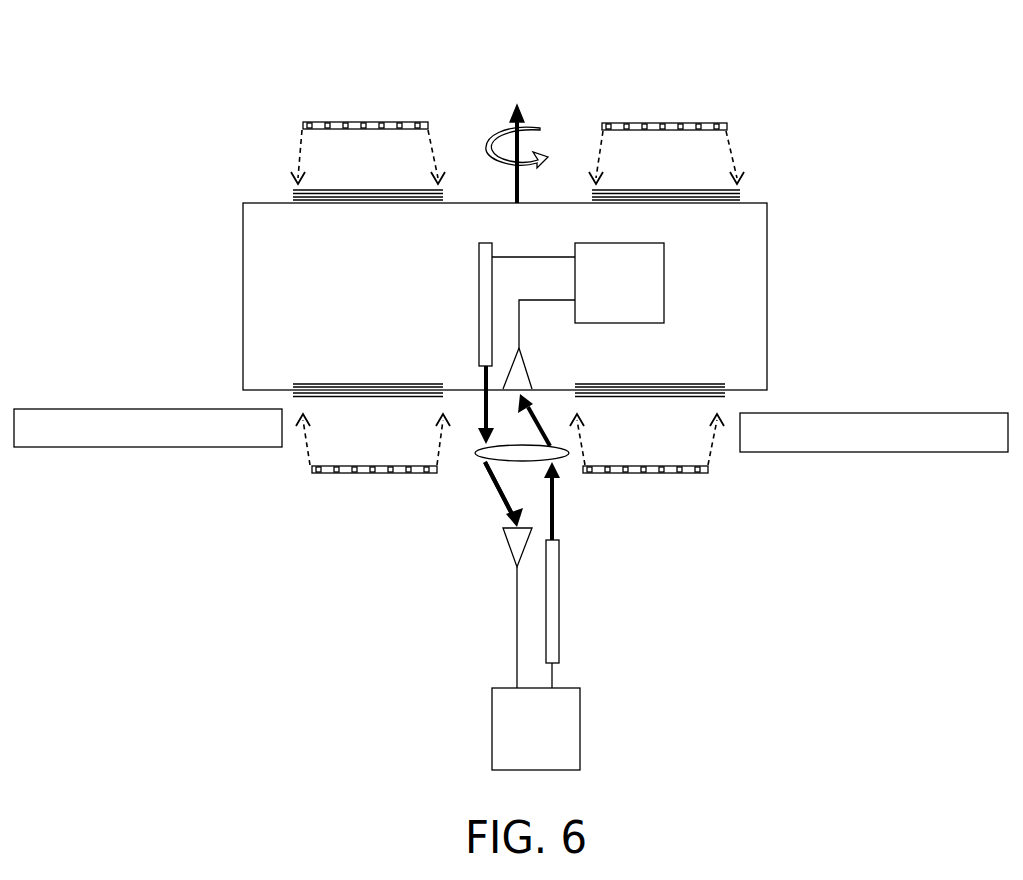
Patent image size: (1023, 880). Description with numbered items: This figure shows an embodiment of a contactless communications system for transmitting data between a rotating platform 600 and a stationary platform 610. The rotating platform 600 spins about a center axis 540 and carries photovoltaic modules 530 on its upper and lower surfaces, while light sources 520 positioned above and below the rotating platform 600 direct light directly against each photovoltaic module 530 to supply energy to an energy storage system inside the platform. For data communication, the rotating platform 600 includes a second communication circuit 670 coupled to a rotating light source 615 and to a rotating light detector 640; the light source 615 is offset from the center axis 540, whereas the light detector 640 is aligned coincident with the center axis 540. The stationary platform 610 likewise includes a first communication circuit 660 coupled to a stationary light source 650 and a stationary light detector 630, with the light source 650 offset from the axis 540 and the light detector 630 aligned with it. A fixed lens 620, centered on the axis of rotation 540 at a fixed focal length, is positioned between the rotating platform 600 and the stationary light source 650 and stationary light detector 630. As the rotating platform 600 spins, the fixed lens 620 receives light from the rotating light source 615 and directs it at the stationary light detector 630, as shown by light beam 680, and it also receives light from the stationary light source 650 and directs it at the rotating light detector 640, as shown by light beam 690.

The light sources 520 is at (313, 121).
The photovoltaic modules 530 is at (293, 192).
The axis 540 is at (520, 108).
The rotating platform 600 is at (243, 310).
The stationary platform 610 is at (118, 448).
The rotating light source 615 is at (478, 310).
The fixed lens 620 is at (478, 456).
The stationary light detector 630 is at (505, 548).
The rotating light detector 640 is at (525, 362).
The stationary light source 650 is at (559, 580).
The first communication circuit 660 is at (580, 730).
The second communication circuit 670 is at (664, 280).
The light beam 680 is at (495, 485).
The light beam 690 is at (553, 525).